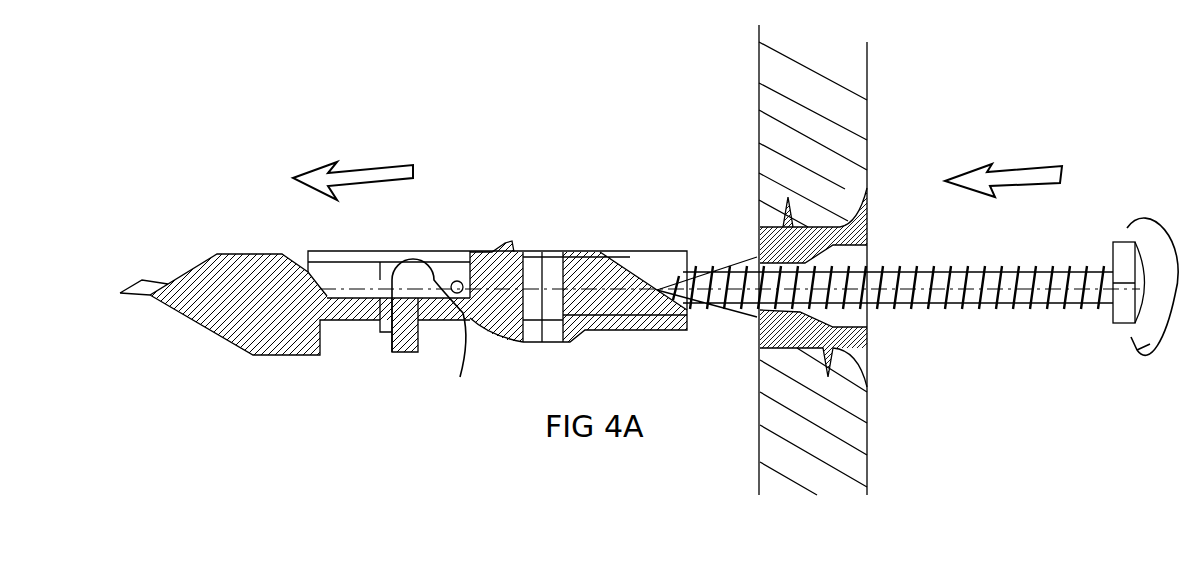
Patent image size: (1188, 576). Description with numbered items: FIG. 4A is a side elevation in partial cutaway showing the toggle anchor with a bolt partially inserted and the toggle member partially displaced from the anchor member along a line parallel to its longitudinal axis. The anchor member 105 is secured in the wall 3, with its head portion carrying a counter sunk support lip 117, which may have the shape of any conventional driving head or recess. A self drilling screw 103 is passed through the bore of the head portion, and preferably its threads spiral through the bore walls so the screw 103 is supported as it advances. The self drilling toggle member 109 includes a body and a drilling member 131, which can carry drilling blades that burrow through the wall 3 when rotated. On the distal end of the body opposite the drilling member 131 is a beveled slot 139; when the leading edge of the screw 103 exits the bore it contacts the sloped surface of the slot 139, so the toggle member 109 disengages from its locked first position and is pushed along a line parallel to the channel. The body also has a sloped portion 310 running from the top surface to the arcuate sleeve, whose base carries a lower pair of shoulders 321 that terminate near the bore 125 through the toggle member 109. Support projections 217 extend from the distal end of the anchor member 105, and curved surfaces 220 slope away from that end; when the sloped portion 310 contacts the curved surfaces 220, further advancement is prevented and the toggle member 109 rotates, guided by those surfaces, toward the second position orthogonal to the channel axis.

The wall 3 is at (870, 47).
The self drilling screw 103 is at (1033, 326).
The anchor member 105 is at (787, 243).
The self drilling toggle member 109 is at (488, 226).
The counter sunk support lip 117 is at (867, 182).
The bore 125 is at (542, 252).
The drilling member 131 is at (192, 318).
The beveled slot 139 is at (627, 257).
The support projections 217 is at (377, 282).
The curved surfaces 220 is at (440, 290).
The sloped portion 310 is at (448, 337).
The lower pair of shoulders 321 is at (412, 252).